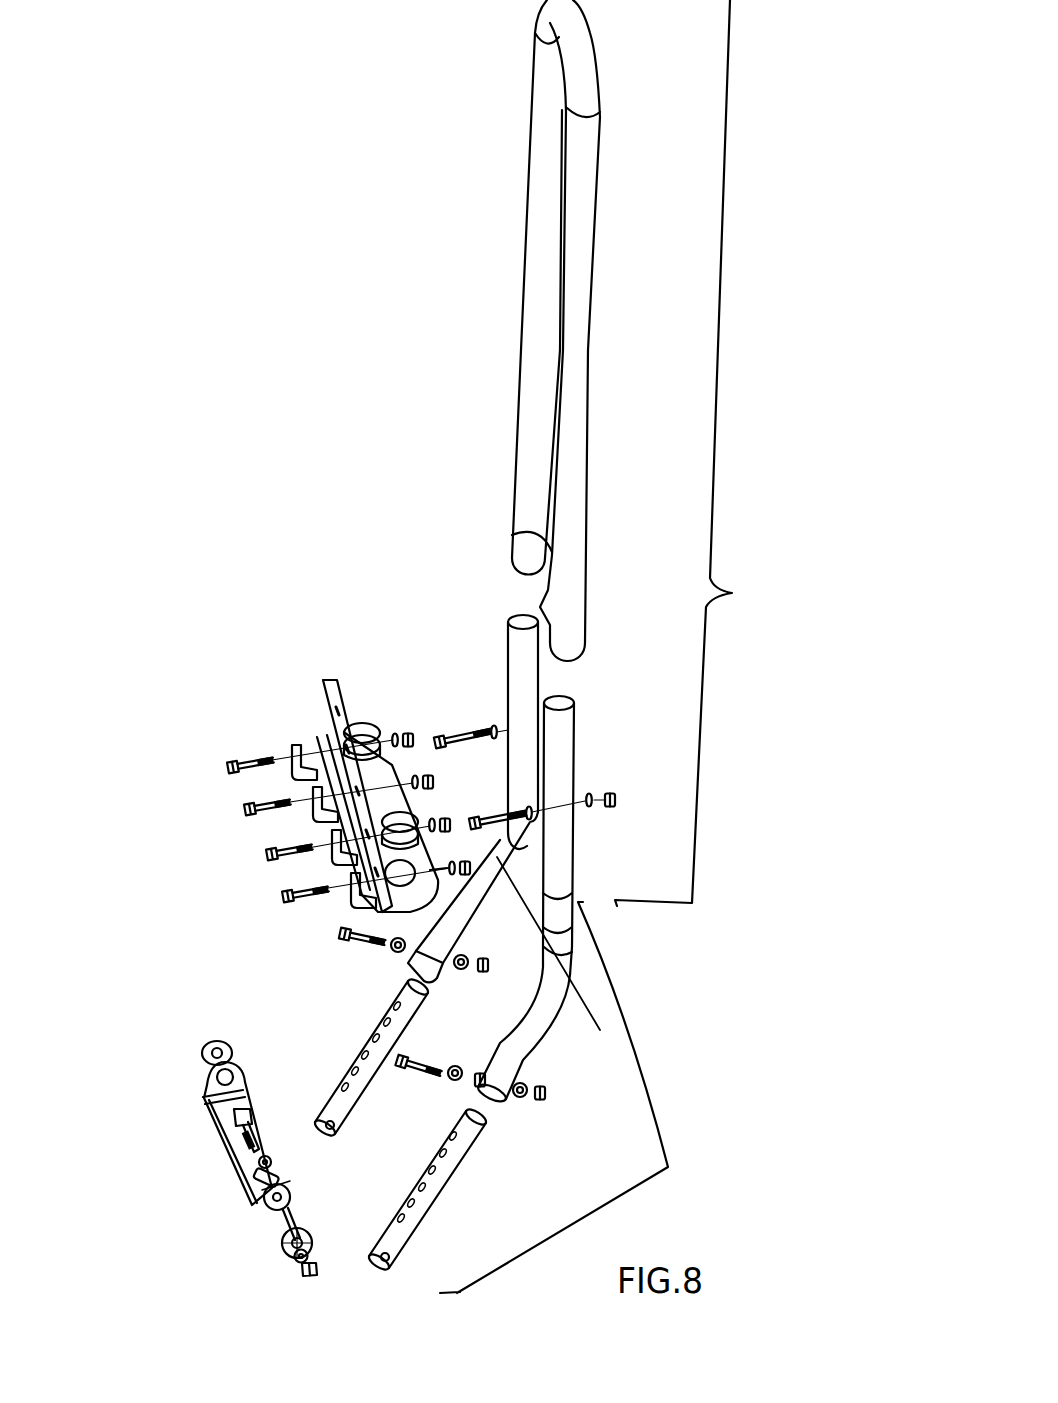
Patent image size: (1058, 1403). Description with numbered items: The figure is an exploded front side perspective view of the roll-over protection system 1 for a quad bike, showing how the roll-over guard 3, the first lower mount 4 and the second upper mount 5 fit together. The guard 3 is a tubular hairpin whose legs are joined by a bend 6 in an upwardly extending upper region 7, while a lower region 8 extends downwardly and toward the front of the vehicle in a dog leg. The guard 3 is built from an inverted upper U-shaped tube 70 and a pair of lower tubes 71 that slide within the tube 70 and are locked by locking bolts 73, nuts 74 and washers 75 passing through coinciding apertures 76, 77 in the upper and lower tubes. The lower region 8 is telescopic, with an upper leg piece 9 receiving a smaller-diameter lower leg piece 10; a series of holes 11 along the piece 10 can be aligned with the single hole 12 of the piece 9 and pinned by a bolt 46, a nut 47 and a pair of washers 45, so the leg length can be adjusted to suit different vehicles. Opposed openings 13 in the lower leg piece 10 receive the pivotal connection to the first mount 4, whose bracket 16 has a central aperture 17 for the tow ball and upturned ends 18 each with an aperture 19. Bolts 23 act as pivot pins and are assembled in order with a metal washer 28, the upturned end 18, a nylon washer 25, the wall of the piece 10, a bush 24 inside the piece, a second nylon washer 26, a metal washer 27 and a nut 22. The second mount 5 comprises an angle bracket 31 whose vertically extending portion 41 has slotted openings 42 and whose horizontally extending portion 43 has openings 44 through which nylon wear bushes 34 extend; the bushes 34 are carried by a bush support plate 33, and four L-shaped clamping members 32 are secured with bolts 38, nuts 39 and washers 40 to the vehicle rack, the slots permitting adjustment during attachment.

The roll-over protection system 1 is at (672, 1018).
The roll-over guard 3 is at (560, 330).
The first lower mount 4 is at (186, 1020).
The second upper mount 5 is at (308, 660).
The bend 6 is at (594, 80).
The upper region 7 is at (686, 453).
The lower region 8 is at (668, 1170).
The upper leg piece 9 is at (560, 1000).
The lower leg piece 10 is at (457, 1167).
The holes 11 is at (345, 1090).
The hole 12 is at (447, 965).
The opposed openings 13 is at (322, 1125).
The bracket 16 is at (212, 1098).
The central aperture 17 is at (246, 1146).
The upturned ends 18 is at (205, 1090).
The aperture 19 is at (278, 1173).
The nuts 22 is at (308, 1278).
The bolts 23 is at (229, 1073).
The bushes 24 is at (217, 1052).
The anti-rattle nylon washers 25 is at (258, 1206).
The anti-rattle nylon washers 26 is at (203, 1050).
The metal washer 27 is at (320, 1250).
The metal washer 28 is at (263, 1037).
The angle bracket 31 is at (317, 737).
The L-shaped clamping members 32 is at (307, 760).
The bush support plate 33 is at (323, 730).
The nylon wear bushes 34 is at (368, 724).
The bolts 38 is at (242, 810).
The nuts 39 is at (420, 775).
The washers 40 is at (430, 818).
The vertically extending portion 41 is at (327, 737).
The slits/slotted openings 42 is at (293, 750).
The horizontally extending portion 43 is at (420, 862).
The openings 44 is at (422, 950).
The washers 45 is at (467, 956).
The bolt 46 is at (323, 680).
The nut 47 is at (330, 860).
The upper U-shaped tube 70 is at (538, 283).
The lower tubes 71 is at (533, 648).
The locking bolts 73 is at (547, 847).
The nuts 74 is at (620, 800).
The washers 75 is at (589, 795).
The aperture 76 is at (547, 807).
The aperture 77 is at (515, 543).